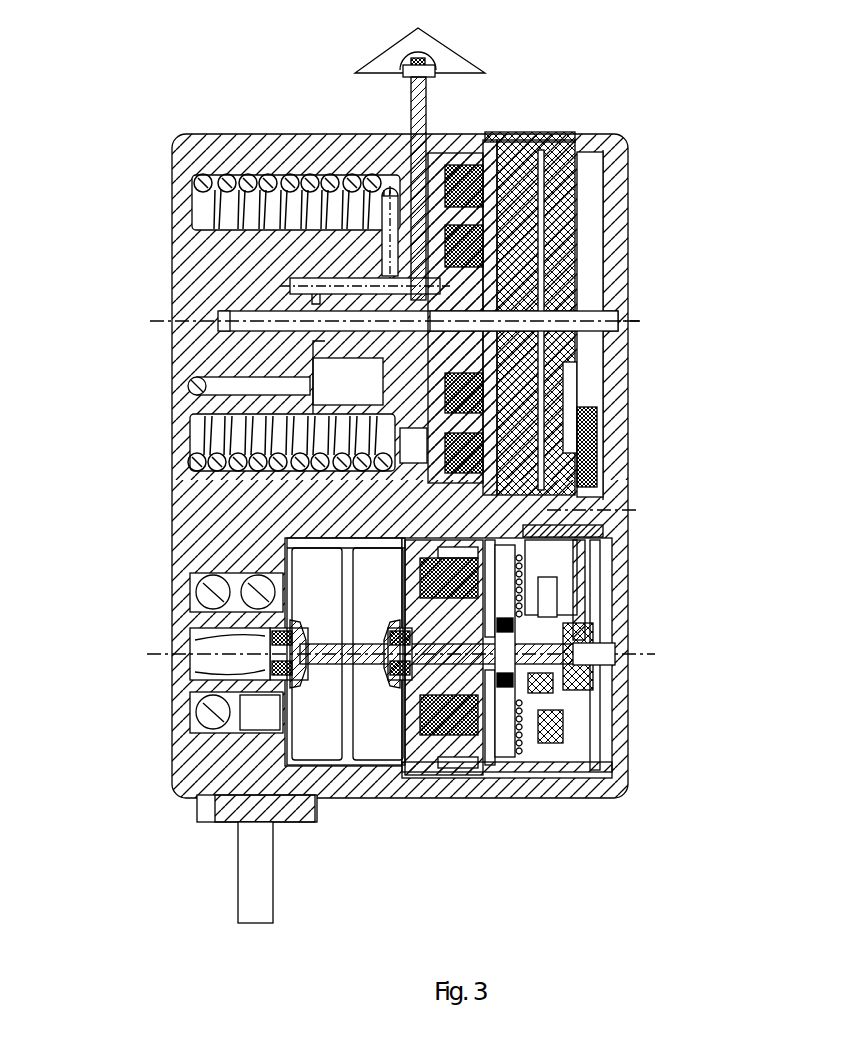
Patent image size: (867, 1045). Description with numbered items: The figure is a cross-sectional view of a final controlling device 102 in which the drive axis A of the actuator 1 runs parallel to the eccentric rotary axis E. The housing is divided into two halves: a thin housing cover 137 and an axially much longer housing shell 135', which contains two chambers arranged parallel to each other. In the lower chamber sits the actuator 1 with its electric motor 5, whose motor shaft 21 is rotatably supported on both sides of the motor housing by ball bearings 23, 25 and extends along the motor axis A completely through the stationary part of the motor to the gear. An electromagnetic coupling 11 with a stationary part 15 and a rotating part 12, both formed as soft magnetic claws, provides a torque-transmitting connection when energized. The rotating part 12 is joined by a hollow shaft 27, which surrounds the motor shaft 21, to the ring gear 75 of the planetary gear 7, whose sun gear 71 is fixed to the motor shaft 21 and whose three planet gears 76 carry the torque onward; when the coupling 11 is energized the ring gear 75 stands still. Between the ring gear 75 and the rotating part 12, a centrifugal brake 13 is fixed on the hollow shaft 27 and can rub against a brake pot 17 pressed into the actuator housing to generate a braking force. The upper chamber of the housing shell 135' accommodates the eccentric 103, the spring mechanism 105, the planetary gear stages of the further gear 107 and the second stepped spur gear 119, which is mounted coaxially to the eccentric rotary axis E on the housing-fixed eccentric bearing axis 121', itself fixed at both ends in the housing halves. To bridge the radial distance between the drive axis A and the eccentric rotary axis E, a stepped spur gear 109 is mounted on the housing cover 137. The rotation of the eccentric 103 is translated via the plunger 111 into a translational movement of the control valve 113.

The actuator 1 is at (724, 542).
The electric motor 5 is at (375, 740).
The planetary gear 7 is at (582, 750).
The electromagnetic coupling 11 is at (432, 790).
The rotating part of the electromagnetic coupling 12 is at (495, 790).
The centrifugal brake 13 is at (528, 785).
The stationary part of the electromagnetic coupling 15 is at (385, 700).
The brake pot 17 is at (508, 780).
The motor shaft 21 is at (300, 662).
The ball bearing 23 is at (345, 700).
The ball bearing 25 is at (290, 640).
The hollow shaft 27 is at (455, 790).
The sun gear 71 is at (612, 628).
The ring gear 75 is at (558, 725).
The planet gear 76 is at (560, 723).
The final controlling device 102 is at (680, 396).
The eccentric 103 is at (335, 266).
The spring mechanism 105 is at (210, 212).
The further gear 107 is at (605, 418).
The spur gear 109 is at (605, 485).
The plunger 111 is at (430, 165).
The control valve 113 is at (455, 73).
The second stepped spur gear 119 is at (605, 380).
The eccentric bearing axis 121' is at (162, 350).
The housing shell 135' is at (216, 859).
The housing cover 137 is at (615, 205).
The motor axis A is at (160, 655).
The eccentric rotary axis E is at (615, 318).